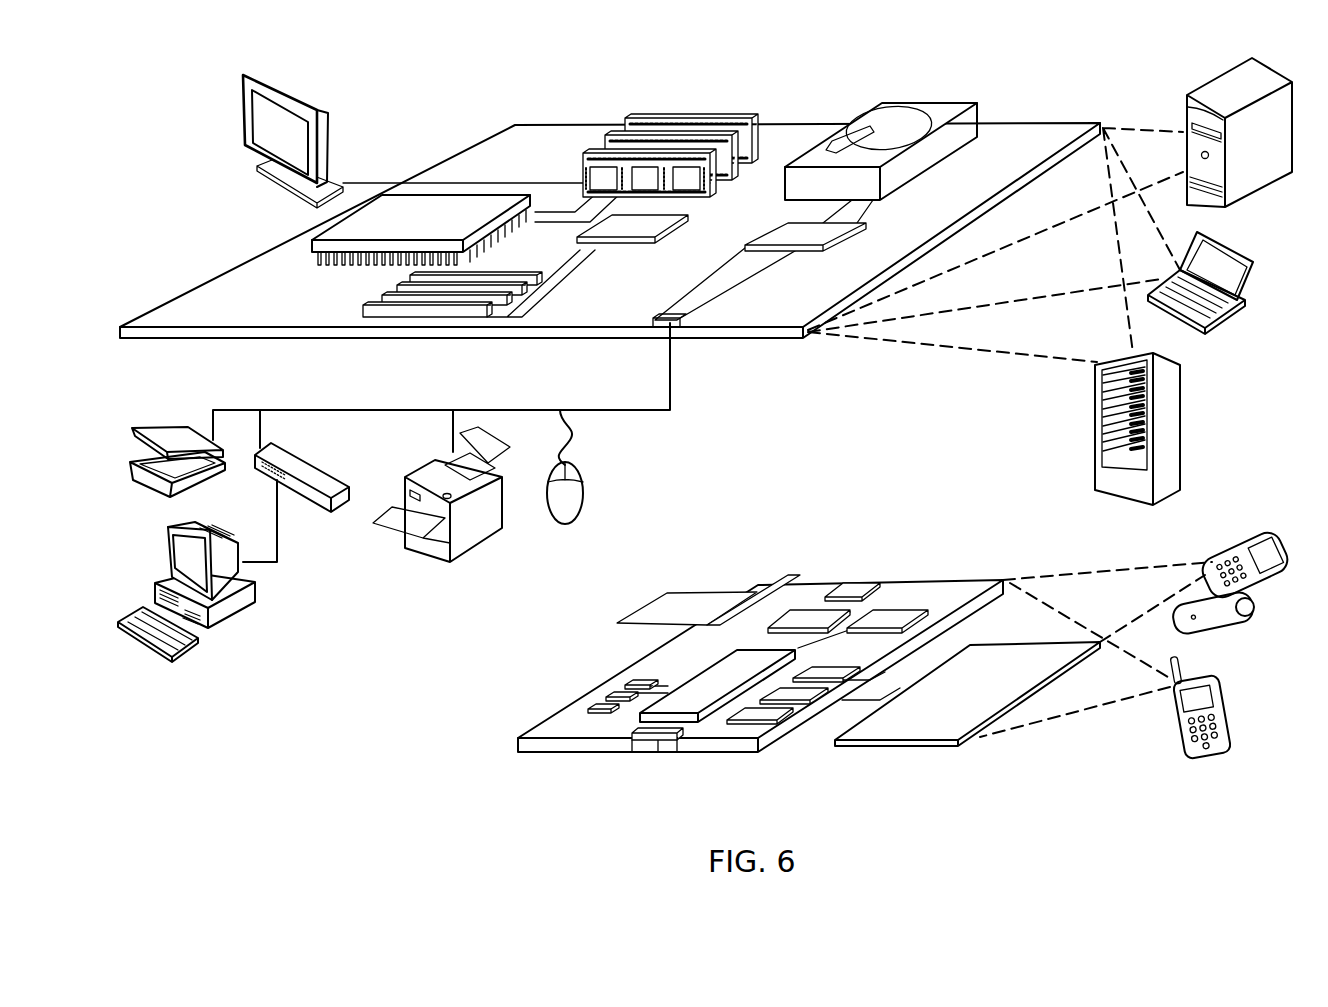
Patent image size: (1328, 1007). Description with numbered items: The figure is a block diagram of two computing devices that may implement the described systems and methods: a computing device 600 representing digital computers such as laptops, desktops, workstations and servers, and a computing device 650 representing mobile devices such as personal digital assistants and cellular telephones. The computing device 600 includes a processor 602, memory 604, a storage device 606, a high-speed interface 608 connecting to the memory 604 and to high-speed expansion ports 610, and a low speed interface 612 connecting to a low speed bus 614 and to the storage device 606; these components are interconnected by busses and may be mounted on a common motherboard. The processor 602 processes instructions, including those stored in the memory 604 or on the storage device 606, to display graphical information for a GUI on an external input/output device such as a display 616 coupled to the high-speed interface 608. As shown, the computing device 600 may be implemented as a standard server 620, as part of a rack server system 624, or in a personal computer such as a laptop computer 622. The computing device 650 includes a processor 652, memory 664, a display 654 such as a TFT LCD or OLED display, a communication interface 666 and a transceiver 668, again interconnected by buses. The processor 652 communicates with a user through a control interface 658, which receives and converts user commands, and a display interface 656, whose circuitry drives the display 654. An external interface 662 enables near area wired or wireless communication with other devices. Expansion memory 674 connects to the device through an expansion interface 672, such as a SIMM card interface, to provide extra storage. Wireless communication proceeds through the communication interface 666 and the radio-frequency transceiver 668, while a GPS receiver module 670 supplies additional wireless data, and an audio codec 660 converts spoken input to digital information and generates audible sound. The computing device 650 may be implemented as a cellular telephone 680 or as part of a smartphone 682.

The computing device 600 is at (440, 100).
The processor 602 is at (313, 243).
The memory 604 is at (640, 120).
The storage device 606 is at (866, 106).
The high-speed interface 608 is at (605, 228).
The high-speed expansion ports 610 is at (377, 298).
The low speed interface 612 is at (780, 228).
The low speed bus 614 is at (680, 323).
The display 616 is at (244, 73).
The standard server 620 is at (1185, 112).
The laptop computer 622 is at (1252, 260).
The rack server system 624 is at (1093, 452).
The computing device 650 is at (495, 744).
The processor 652 is at (692, 707).
The display 654 is at (927, 727).
The display interface 656 is at (760, 716).
The control interface 658 is at (797, 692).
The audio codec 660 is at (820, 672).
The external interface 662 is at (657, 743).
The memory 664 is at (608, 699).
The communication interface 666 is at (812, 618).
The transceiver 668 is at (887, 615).
The GPS receiver module 670 is at (861, 582).
The expansion interface 672 is at (735, 588).
The expansion memory 674 is at (673, 592).
The cellular telephone 680 is at (1233, 536).
The smartphone 682 is at (1175, 710).